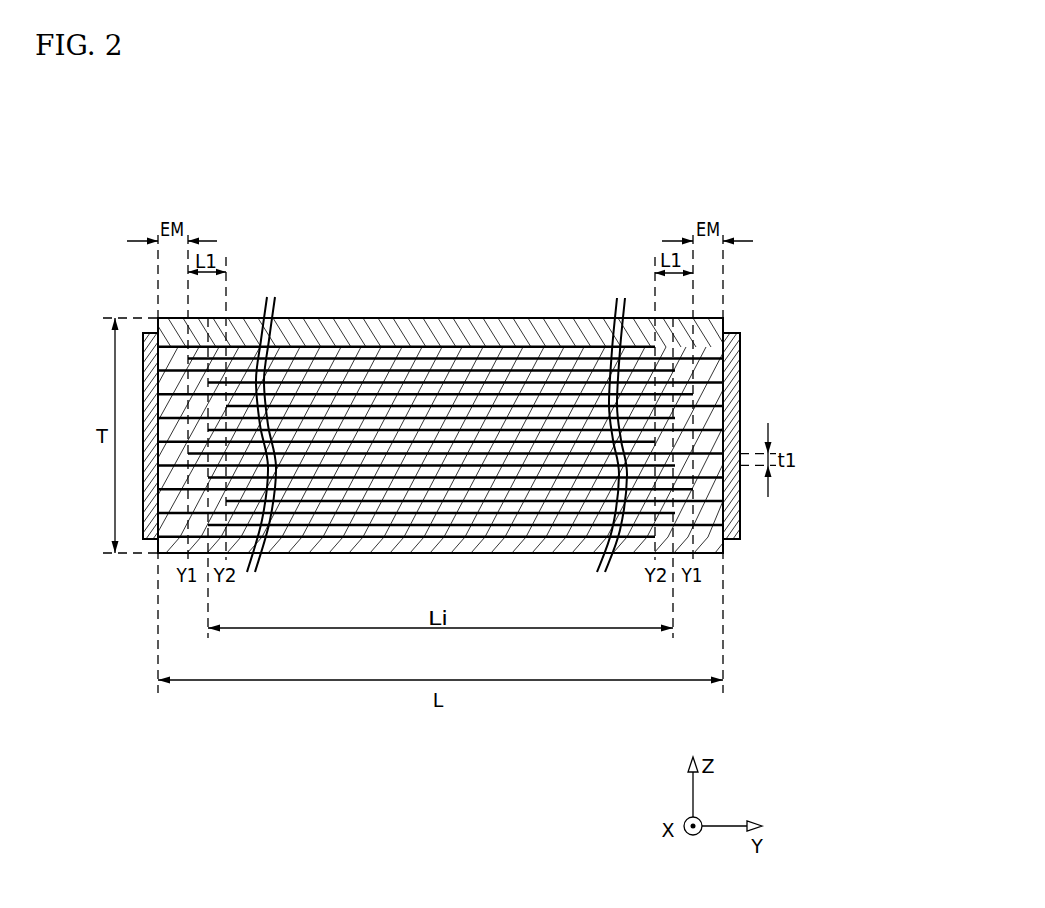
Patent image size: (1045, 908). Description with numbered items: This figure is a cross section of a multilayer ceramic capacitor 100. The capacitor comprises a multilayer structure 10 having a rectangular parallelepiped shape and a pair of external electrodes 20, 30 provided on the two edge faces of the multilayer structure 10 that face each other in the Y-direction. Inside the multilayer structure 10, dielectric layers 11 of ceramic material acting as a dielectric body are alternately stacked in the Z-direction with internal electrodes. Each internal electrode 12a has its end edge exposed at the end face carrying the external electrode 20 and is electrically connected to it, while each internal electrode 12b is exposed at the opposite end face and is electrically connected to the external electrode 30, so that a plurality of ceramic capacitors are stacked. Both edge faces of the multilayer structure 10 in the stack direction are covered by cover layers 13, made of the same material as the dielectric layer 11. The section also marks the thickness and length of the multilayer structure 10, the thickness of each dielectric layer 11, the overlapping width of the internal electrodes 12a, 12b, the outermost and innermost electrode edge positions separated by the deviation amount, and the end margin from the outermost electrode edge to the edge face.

The multilayer ceramic capacitor 100 is at (668, 222).
The multilayer structure 10 is at (594, 318).
The dielectric layer 11 is at (550, 365).
The internal electrode 12a is at (320, 370).
The internal electrode 12b is at (400, 382).
The cover layer 13 is at (461, 330).
The external electrode 20 is at (151, 333).
The external electrode 30 is at (730, 333).